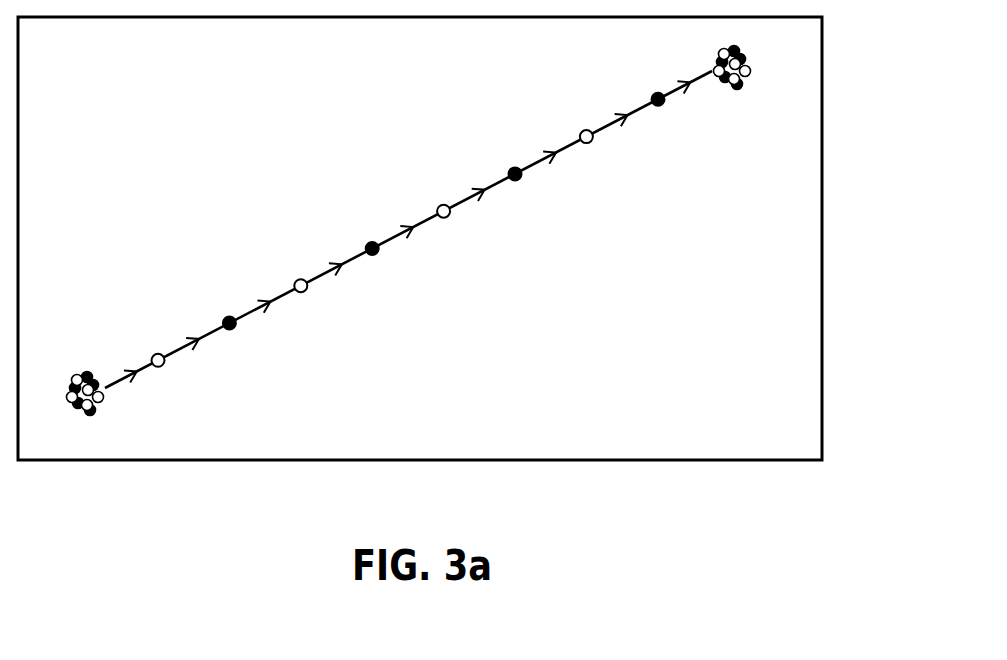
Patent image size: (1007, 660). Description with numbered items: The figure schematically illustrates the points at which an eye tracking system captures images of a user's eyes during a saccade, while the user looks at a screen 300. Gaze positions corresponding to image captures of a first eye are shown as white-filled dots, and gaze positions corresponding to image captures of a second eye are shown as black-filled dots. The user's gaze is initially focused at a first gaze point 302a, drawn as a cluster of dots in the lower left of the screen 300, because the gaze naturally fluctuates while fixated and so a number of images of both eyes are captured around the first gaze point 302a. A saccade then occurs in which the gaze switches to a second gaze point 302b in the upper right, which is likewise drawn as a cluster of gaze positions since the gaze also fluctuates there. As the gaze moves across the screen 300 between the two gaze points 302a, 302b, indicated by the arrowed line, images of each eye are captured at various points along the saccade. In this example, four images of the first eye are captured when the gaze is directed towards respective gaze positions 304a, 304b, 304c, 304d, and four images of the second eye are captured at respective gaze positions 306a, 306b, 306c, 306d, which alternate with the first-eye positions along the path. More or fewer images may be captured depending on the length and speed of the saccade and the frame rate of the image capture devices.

The screen 300 is at (700, 462).
The first gaze point 302a is at (108, 388).
The second gaze point 302b is at (752, 68).
The gaze position 304a is at (152, 356).
The gaze position 304b is at (297, 280).
The gaze position 304c is at (442, 205).
The gaze position 304d is at (586, 130).
The gaze position 306a is at (238, 328).
The gaze position 306b is at (377, 253).
The gaze position 306c is at (522, 178).
The gaze position 306d is at (663, 105).